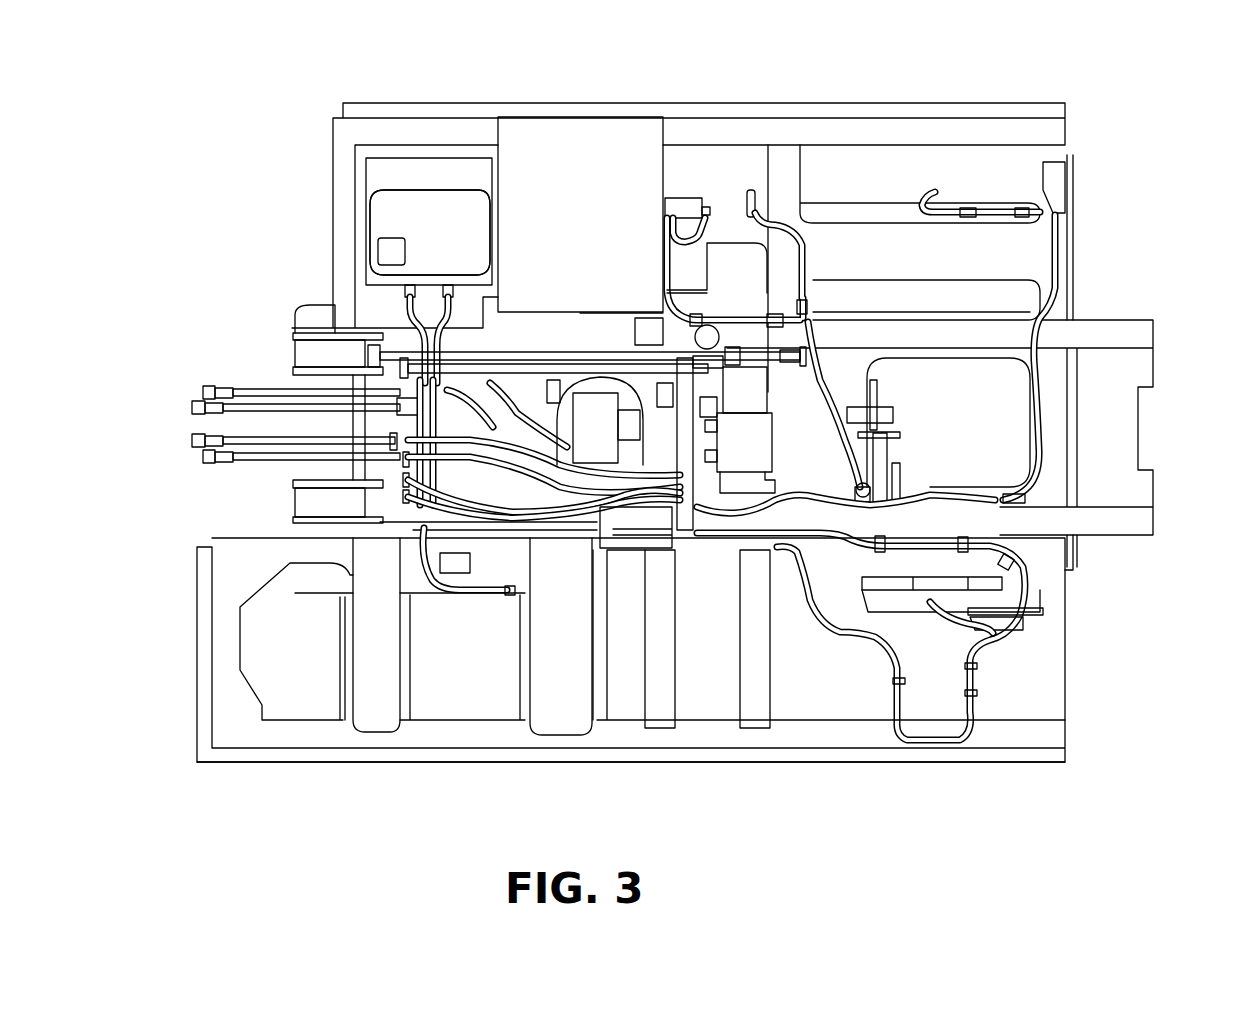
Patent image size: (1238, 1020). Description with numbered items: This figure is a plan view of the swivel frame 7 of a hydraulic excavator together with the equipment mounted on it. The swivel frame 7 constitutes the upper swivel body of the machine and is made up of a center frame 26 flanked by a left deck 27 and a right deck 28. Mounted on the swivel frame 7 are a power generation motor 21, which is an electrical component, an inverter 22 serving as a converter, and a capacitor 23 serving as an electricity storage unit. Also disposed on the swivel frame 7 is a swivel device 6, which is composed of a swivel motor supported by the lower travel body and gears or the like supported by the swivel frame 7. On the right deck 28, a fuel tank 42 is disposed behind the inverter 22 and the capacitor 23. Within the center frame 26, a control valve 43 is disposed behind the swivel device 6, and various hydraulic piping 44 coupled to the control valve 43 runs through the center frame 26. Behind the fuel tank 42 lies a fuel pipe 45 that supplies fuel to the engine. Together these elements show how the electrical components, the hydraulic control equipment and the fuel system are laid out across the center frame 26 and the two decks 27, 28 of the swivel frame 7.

The swivel device 6 is at (603, 404).
The swivel frame 7 is at (415, 778).
The power generation motor 21 is at (895, 600).
The inverter 22 is at (420, 208).
The capacitor 23 is at (430, 232).
The center frame 26 is at (283, 352).
The left deck 27 is at (183, 683).
The right deck 28 is at (320, 205).
The fuel tank 42 is at (575, 185).
The control valve 43 is at (752, 447).
The hydraulic piping 44 is at (183, 462).
The fuel pipe 45 is at (813, 312).